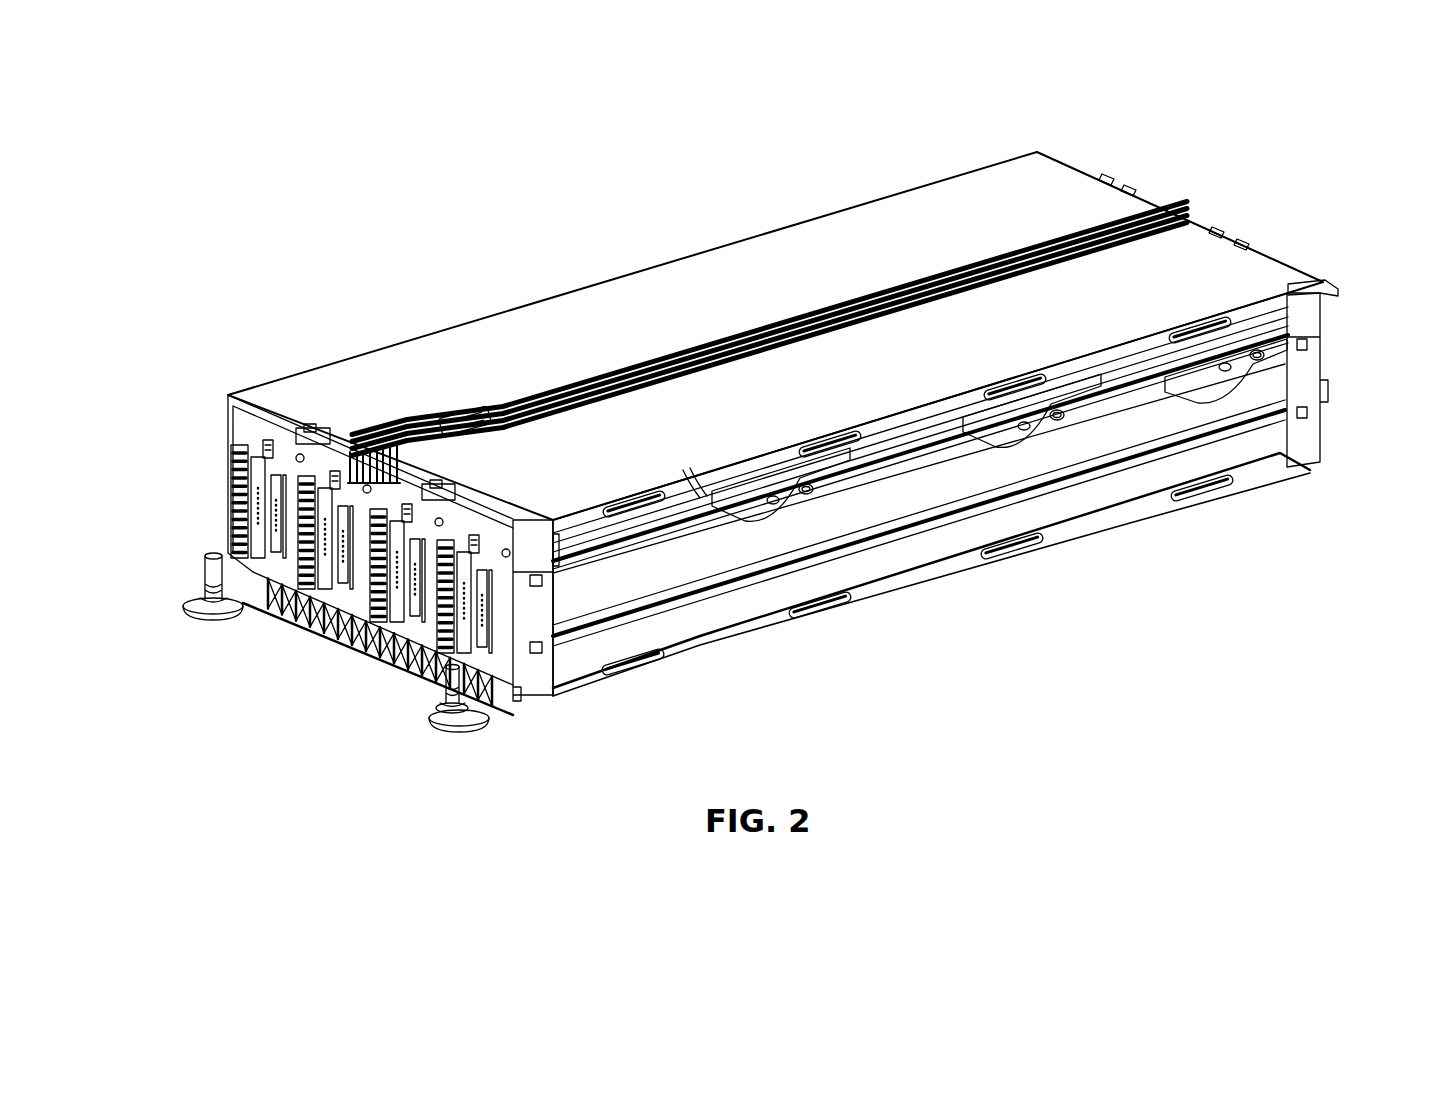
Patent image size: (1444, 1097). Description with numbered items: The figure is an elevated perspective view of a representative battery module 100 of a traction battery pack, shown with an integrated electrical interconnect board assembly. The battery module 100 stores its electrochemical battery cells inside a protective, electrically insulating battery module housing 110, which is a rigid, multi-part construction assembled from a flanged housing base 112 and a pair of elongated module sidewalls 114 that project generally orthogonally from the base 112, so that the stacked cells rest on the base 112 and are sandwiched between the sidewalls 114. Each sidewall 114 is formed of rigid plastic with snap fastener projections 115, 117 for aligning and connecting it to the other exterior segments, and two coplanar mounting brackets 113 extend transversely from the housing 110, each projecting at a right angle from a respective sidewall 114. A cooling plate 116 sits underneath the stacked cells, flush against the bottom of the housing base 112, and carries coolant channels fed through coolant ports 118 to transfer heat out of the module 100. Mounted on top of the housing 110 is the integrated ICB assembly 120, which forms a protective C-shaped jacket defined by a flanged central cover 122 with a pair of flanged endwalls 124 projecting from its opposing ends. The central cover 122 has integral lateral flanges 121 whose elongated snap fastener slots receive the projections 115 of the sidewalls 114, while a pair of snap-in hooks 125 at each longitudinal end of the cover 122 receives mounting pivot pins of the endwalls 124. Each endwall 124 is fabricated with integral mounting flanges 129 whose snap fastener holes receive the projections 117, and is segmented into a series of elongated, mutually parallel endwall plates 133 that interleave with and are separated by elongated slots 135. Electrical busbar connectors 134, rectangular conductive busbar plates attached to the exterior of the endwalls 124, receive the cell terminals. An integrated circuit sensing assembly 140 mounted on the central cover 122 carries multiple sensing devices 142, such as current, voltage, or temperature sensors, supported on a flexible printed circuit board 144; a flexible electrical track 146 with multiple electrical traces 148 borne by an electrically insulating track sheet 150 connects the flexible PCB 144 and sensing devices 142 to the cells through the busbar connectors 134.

The battery module 100 is at (338, 125).
The battery module housing 110 is at (1250, 563).
The housing base 112 is at (853, 612).
The mounting bracket 113 is at (1325, 300).
The module sidewall 114 is at (1267, 448).
The snap fastener projection 115 is at (638, 508).
The cooling plate 116 is at (449, 694).
The snap fastener projection 117 is at (1306, 413).
The coolant port 118 is at (203, 572).
The integrated interconnect board (ICB) assembly 120 is at (672, 228).
The lateral flange 121 is at (728, 514).
The central cover 122 is at (922, 213).
The endwall 124 is at (1077, 172).
The snap-in hook 125 is at (294, 433).
The mounting flange 129 is at (1303, 367).
The endwall plate 133 is at (287, 617).
The electrical busbar connector 134 is at (337, 468).
The elongated slot 135 is at (400, 667).
The integrated circuit (IC) sensing assembly 140 is at (484, 388).
The sensing device 142 is at (506, 432).
The flexible printed circuit board 144 is at (437, 450).
The flexible electrical track 146 is at (866, 274).
The electrical trace 148 is at (892, 297).
The track sheet 150 is at (822, 305).